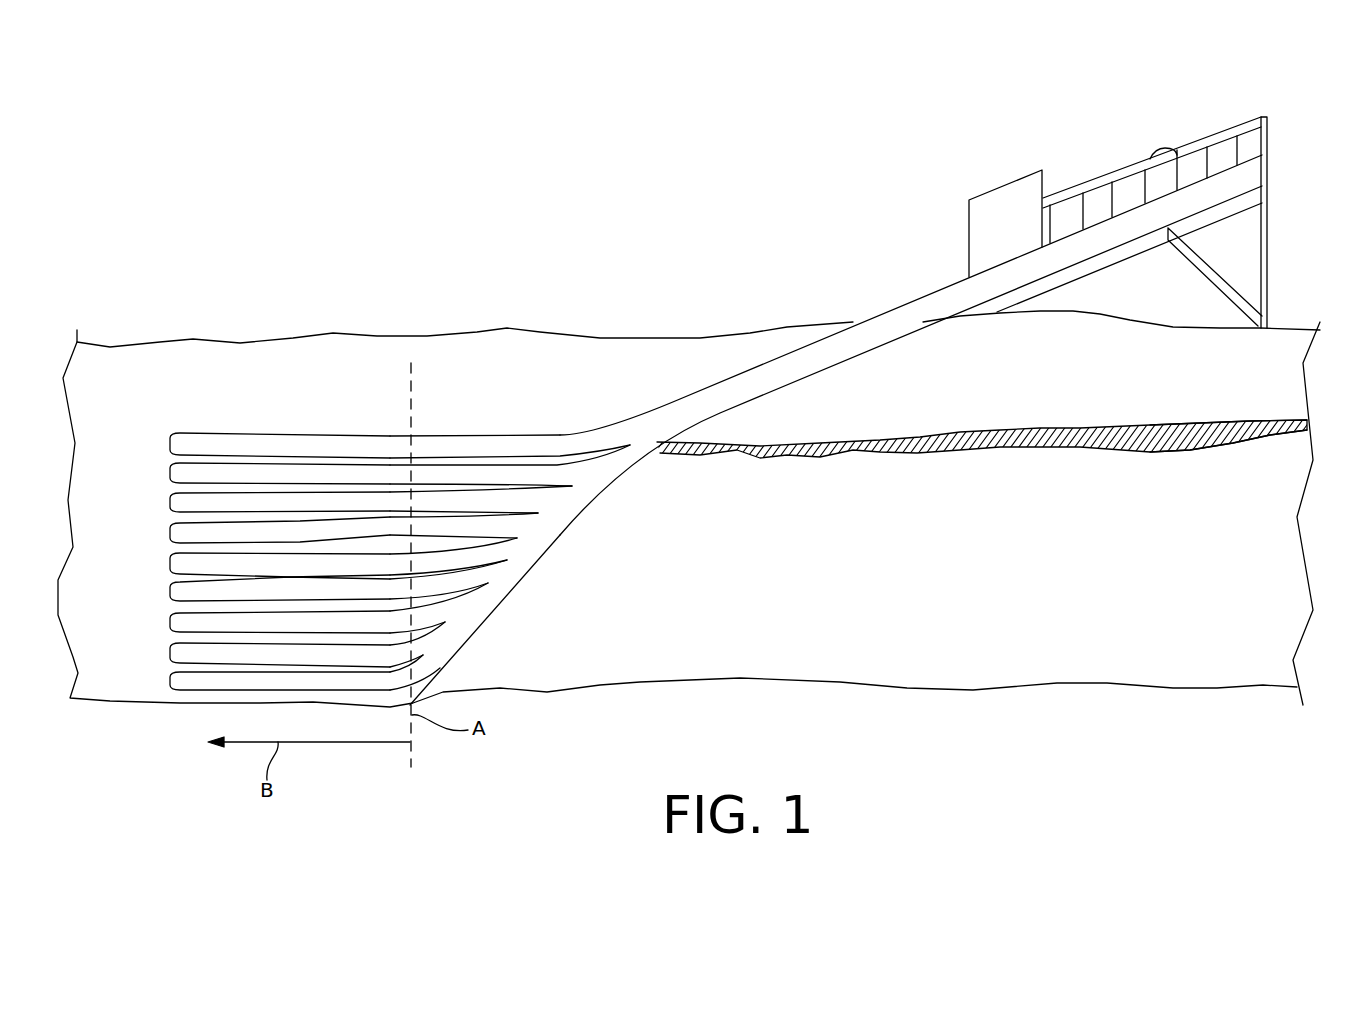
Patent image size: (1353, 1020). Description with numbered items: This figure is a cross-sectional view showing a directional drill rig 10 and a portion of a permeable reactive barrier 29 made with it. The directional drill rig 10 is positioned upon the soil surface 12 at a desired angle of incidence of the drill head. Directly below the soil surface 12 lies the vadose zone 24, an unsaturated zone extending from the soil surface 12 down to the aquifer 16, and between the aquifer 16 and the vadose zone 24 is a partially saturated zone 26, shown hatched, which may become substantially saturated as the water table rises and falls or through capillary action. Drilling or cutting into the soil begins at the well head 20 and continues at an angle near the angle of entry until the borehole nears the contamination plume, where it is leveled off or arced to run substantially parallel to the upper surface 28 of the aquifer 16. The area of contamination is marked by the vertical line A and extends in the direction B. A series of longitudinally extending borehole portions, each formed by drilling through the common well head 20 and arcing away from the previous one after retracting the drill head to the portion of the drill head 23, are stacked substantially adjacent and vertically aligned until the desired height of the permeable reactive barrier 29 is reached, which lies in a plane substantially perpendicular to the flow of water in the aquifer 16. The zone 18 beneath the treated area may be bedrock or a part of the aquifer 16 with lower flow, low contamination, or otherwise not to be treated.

The directional drill rig 10 is at (1102, 200).
The soil surface 12 is at (507, 328).
The aquifer 16 is at (1060, 653).
The zone below the treated area of the aquifer 18 is at (1220, 765).
The well head 20 is at (808, 347).
The portion of the drill head 23 is at (492, 615).
The vadose zone 24 is at (1283, 338).
The partially saturated zone 26 is at (917, 440).
The upper surface of aquifer 28 is at (1232, 443).
The permeable reactive barrier 29 is at (313, 418).